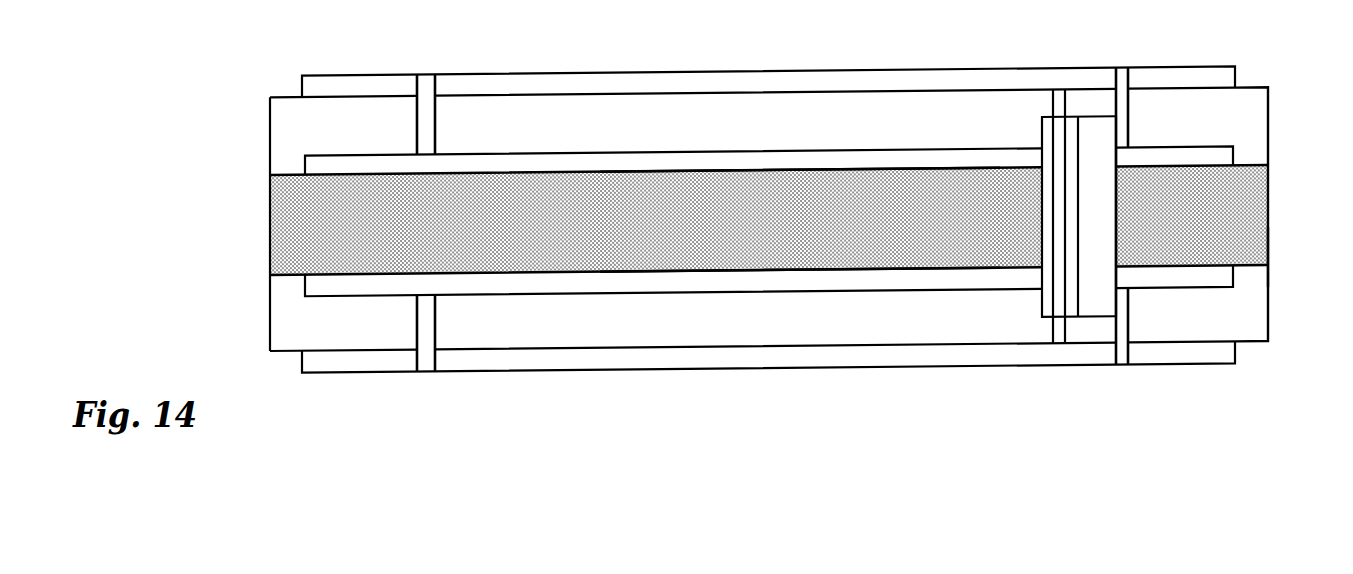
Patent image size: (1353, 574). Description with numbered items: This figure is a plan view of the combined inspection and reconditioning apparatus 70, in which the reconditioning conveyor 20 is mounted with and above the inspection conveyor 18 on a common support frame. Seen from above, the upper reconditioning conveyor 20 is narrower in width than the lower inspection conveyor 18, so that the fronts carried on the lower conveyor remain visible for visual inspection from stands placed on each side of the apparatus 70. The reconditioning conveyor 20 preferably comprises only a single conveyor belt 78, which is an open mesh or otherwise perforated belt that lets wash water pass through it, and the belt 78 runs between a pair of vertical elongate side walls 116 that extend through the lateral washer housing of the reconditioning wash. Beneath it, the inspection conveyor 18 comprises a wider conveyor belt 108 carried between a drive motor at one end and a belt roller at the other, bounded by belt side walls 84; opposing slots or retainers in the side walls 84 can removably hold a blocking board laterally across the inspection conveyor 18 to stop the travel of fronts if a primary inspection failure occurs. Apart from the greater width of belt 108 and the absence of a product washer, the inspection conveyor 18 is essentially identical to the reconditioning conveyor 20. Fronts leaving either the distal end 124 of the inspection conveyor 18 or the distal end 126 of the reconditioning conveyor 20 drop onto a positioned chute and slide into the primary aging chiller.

The inspection and reconditioning apparatus 70 is at (254, 101).
The reconditioning conveyor 20 is at (582, 177).
The conveyor belt 78 is at (732, 200).
The vertical elongate side walls 116 is at (887, 158).
The conveyor belt 108 is at (770, 322).
The inspection conveyor 18 is at (610, 349).
The belt side walls 84 is at (437, 373).
The distal end 124 is at (1270, 115).
The distal end 126 is at (1270, 267).